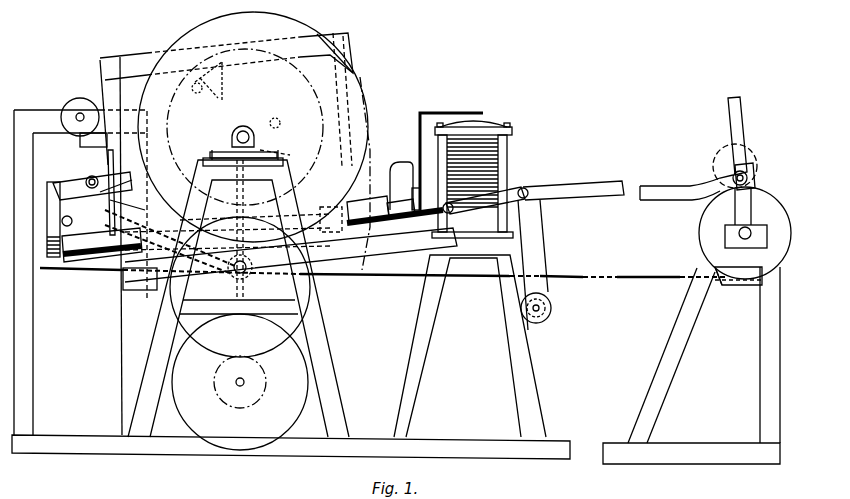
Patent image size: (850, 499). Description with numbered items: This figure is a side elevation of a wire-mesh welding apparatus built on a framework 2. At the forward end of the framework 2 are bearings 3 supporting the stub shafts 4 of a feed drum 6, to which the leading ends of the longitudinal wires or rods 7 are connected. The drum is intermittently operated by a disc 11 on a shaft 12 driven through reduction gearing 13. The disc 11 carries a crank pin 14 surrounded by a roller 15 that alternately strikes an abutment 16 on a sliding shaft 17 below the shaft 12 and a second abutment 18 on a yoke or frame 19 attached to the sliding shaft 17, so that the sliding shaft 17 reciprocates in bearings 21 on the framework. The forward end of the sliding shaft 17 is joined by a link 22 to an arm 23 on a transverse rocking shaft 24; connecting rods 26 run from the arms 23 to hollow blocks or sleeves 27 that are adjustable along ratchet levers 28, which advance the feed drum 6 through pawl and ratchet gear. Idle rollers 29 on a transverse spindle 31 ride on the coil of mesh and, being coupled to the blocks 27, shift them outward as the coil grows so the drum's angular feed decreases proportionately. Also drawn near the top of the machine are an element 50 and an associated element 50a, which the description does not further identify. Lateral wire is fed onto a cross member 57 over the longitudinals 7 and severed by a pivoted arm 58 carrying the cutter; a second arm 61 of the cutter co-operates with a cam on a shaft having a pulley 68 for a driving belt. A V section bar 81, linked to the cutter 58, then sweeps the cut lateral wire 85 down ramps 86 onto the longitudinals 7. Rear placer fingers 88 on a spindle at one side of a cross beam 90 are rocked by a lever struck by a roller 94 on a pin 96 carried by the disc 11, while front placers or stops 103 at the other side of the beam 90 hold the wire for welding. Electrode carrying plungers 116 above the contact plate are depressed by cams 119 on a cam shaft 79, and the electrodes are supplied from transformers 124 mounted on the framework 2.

The framework 2 is at (122, 390).
The bearings 3 is at (743, 286).
The stub shafts 4 is at (725, 240).
The feed drum 6 is at (697, 229).
The longitudinal wires or rods 7 is at (40, 276).
The disc 11 is at (317, 34).
The shaft 12 is at (248, 132).
The reduction gearing 13 is at (365, 85).
The crank pin 14 is at (192, 89).
The roller 15 is at (198, 96).
The abutment 16 is at (205, 162).
The sliding shaft 17 is at (325, 206).
The abutment 18 is at (222, 80).
The yoke or frame 19 is at (348, 36).
The bearings 21 is at (338, 268).
The link 22 is at (523, 187).
The arm 23 is at (537, 247).
The transverse rocking shaft 24 is at (548, 315).
The connecting rods 26 is at (640, 186).
The hollow blocks or sleeves 27 is at (748, 176).
The ratchet lever 28 is at (728, 128).
The idle rollers 29 is at (752, 160).
The transverse spindle 31 is at (771, 491).
The beam 50 is at (152, 47).
The pulley 50a is at (80, 116).
The cross member 57 is at (138, 214).
The pivoted arm 58 is at (85, 182).
The second arm 61 is at (55, 200).
The pulley 68 is at (58, 263).
The cam shaft 79 is at (241, 491).
The V section bar 81 is at (128, 204).
The cut lateral wire 85 is at (401, 278).
The ramps 86 is at (106, 274).
The rear placer fingers 88 is at (178, 232).
The cross beam 90 is at (236, 322).
The roller 94 is at (276, 118).
The pin 96 is at (281, 127).
The front placers or stops 103 is at (240, 287).
The electrode carrying plungers 116 is at (287, 156).
The cams 119 is at (232, 140).
The transformers 124 is at (492, 127).